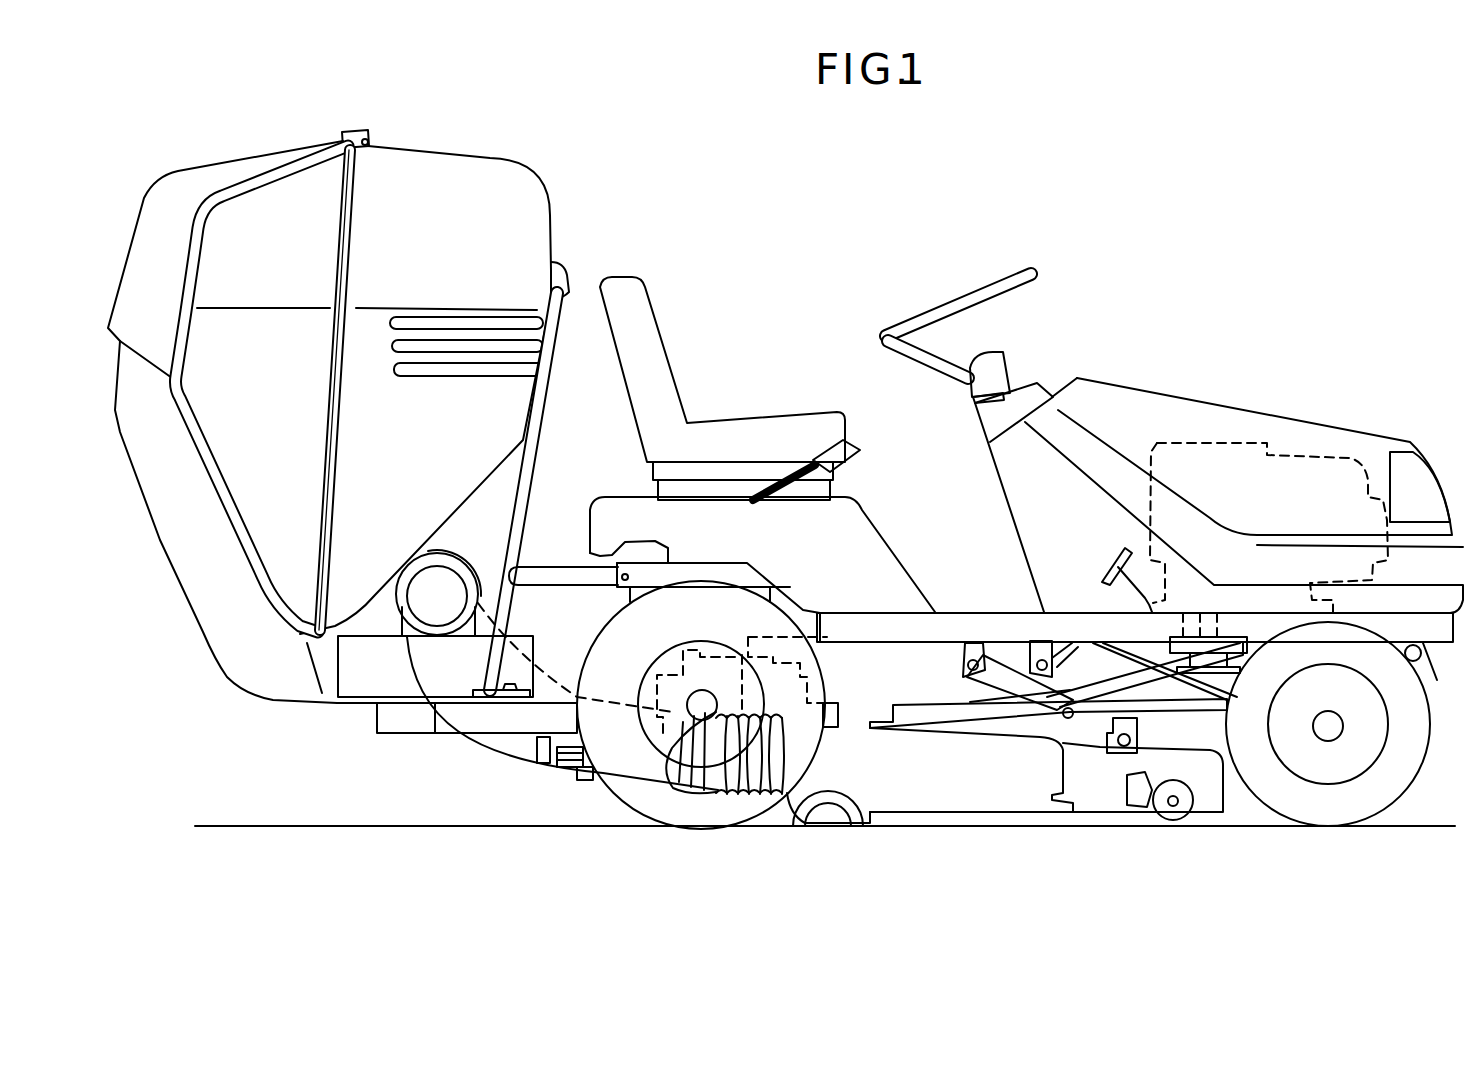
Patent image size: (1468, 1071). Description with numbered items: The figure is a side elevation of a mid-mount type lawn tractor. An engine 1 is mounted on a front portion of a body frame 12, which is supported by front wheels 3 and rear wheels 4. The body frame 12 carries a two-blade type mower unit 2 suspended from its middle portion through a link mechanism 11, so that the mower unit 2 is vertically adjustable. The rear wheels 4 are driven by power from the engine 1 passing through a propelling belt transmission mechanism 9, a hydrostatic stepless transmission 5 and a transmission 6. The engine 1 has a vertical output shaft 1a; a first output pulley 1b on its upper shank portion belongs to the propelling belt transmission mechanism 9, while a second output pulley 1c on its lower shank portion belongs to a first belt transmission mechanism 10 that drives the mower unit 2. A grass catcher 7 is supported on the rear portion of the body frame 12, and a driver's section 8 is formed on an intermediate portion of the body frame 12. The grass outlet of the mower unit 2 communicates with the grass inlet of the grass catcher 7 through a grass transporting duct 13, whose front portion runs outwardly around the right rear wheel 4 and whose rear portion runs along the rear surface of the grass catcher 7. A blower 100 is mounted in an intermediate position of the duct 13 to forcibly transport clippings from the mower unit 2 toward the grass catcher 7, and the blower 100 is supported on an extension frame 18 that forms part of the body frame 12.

The engine 1 is at (1233, 447).
The vertical output shaft 1a is at (1217, 633).
The first output pulley 1b is at (1183, 633).
The second output pulley 1c is at (1150, 640).
The mower unit 2 is at (1095, 803).
The front wheels 3 is at (1320, 815).
The rear wheels 4 is at (633, 797).
The hydrostatic stepless transmission (HST) 5 is at (833, 665).
The transmission 6 is at (683, 672).
The grass catcher 7 is at (543, 205).
The driver's section 8 is at (822, 283).
The propelling belt transmission mechanism 9 is at (905, 655).
The first belt transmission mechanism 10 is at (1080, 686).
The link mechanism 11 is at (1006, 665).
The body frame 12 is at (930, 612).
The grass transporting duct 13 is at (223, 653).
The extension frame 18 is at (450, 733).
The blower 100 is at (365, 683).